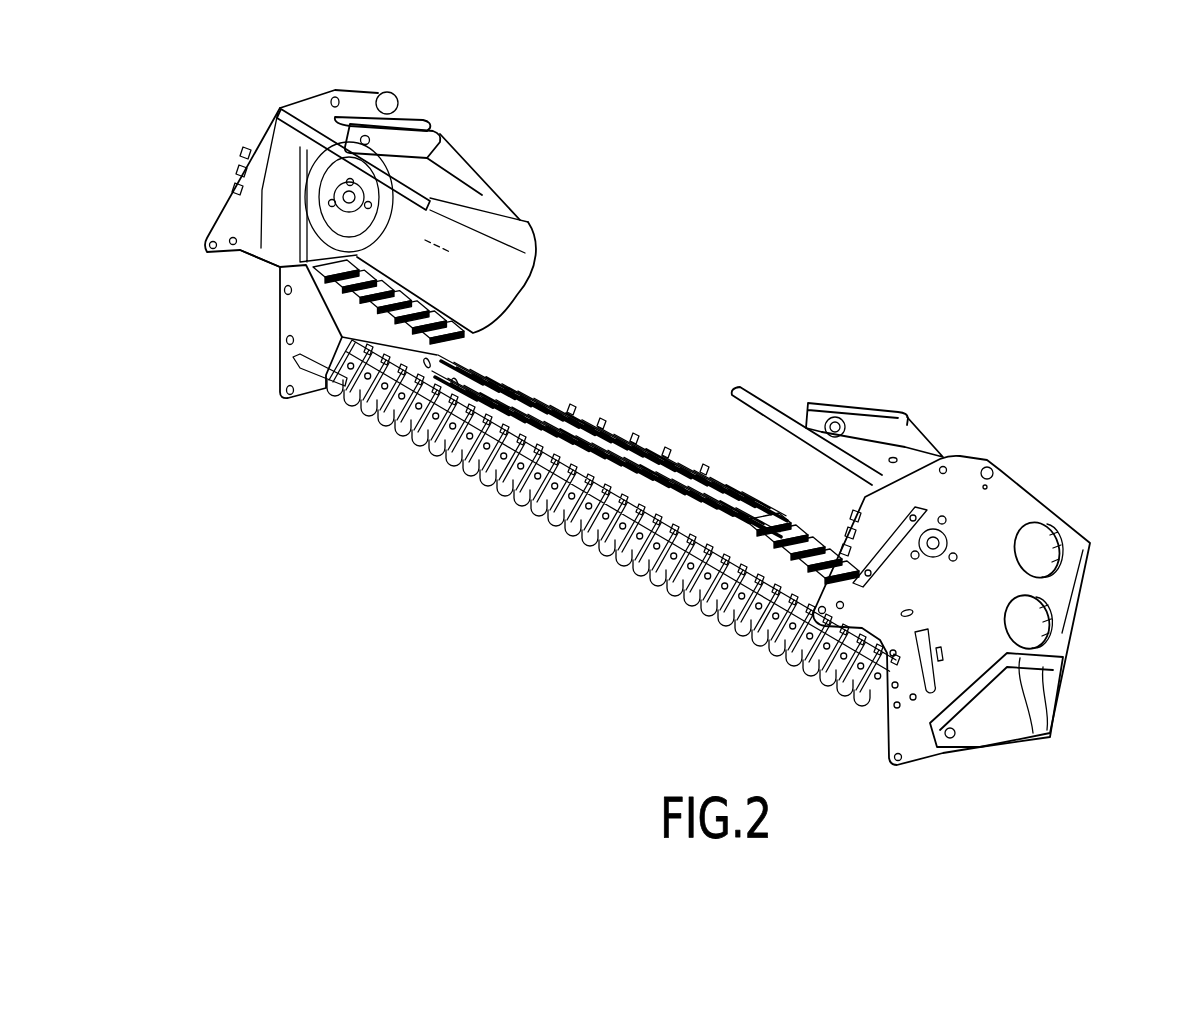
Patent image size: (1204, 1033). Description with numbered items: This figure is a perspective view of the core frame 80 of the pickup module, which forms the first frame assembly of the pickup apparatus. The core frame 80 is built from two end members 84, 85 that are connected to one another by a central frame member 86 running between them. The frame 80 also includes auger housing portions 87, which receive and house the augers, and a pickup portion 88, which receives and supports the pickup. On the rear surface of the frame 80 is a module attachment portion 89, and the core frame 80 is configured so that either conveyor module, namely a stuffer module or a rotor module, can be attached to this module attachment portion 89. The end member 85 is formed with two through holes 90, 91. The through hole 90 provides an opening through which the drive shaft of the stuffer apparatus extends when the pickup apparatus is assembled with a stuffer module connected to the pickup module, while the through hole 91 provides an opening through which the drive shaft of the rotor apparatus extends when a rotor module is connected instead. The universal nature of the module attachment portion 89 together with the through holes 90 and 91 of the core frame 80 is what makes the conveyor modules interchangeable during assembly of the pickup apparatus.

The core frame 80 is at (733, 226).
The end member 84 is at (268, 137).
The end member 85 is at (990, 513).
The central frame member 86 is at (793, 583).
The auger housing portions 87 is at (497, 257).
The pickup portion 88 is at (597, 465).
The module attachment portion 89 is at (1083, 461).
The through hole 90 is at (1038, 627).
The through hole 91 is at (1057, 550).